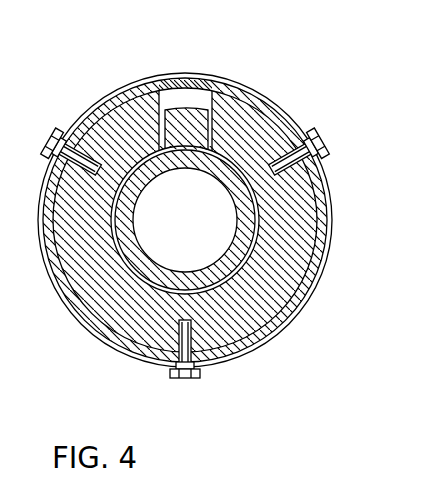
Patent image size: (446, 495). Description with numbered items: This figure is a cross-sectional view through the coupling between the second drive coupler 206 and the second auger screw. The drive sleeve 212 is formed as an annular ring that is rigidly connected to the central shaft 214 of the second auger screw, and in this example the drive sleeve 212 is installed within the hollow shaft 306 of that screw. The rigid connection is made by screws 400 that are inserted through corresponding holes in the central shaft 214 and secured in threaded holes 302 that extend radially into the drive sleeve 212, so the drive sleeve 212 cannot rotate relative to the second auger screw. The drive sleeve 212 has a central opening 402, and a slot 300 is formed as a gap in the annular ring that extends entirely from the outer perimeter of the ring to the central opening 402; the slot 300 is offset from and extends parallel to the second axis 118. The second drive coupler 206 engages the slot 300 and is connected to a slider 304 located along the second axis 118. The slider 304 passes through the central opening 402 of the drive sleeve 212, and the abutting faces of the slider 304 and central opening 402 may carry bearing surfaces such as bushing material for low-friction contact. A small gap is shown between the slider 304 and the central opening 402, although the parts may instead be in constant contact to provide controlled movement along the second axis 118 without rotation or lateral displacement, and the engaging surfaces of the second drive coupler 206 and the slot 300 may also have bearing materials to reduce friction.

The slot 300 is at (230, 194).
The second drive coupler 206 is at (192, 118).
The slider 304 is at (227, 172).
The screws 400 is at (328, 146).
The threaded holes 302 is at (304, 178).
The drive sleeve 212 is at (302, 194).
The central shaft 214 is at (328, 233).
The central opening 402 is at (245, 262).
The hollow shaft 306 is at (264, 338).
The second axis 118 is at (415, 445).